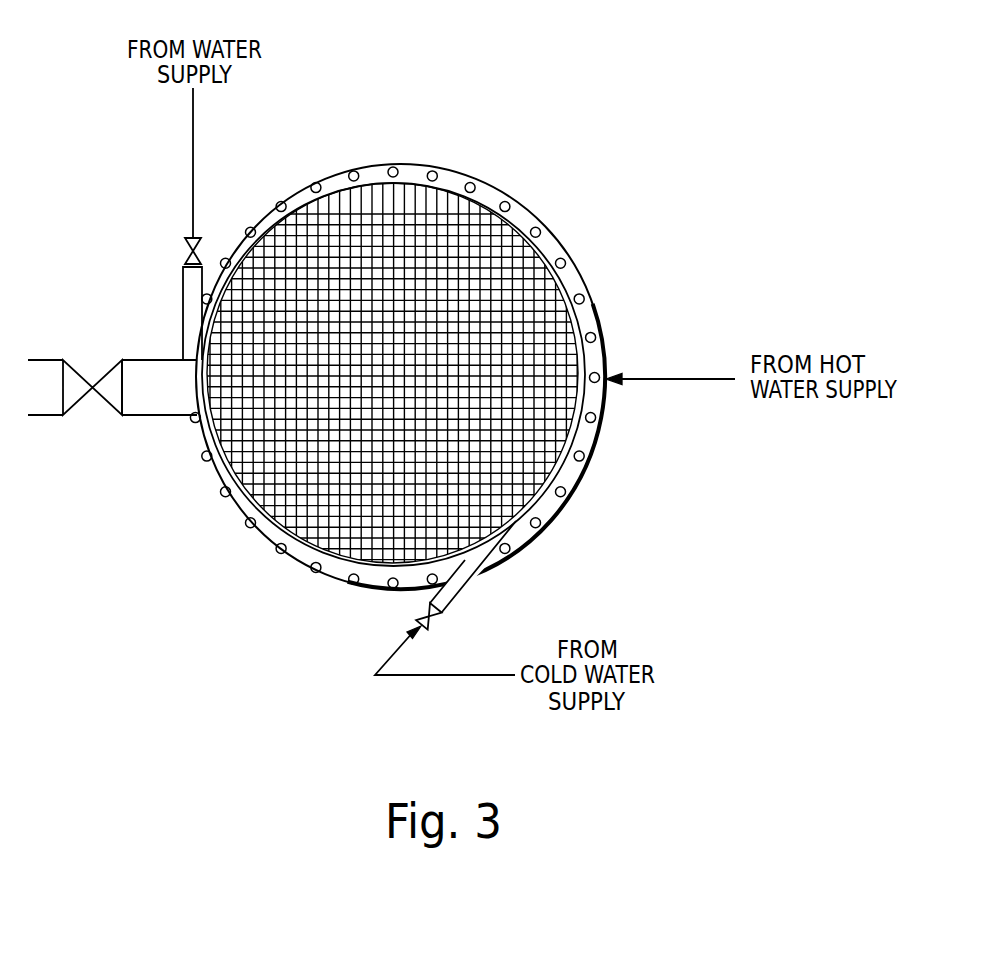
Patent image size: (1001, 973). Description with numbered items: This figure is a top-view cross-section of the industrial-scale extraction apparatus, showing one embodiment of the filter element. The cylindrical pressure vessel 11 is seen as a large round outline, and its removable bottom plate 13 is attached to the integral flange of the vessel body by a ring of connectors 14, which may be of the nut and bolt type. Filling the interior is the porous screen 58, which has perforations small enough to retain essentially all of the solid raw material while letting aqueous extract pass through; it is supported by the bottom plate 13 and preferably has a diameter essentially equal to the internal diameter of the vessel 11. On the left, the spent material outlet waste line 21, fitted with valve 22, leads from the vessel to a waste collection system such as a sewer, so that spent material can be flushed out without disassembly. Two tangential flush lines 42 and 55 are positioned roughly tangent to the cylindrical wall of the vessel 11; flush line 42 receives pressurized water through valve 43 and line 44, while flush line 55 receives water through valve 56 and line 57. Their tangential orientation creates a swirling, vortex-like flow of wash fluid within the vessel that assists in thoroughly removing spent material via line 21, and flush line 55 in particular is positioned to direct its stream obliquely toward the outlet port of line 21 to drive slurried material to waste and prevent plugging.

The cylindrical pressure vessel 11 is at (448, 192).
The removable bottom plate 13 is at (526, 206).
The connectors 14 is at (473, 183).
The spent material outlet waste line 21 is at (138, 358).
The valve 22 is at (75, 362).
The tangential flush line 42 is at (473, 578).
The valve 43 is at (435, 622).
The line 44 is at (428, 677).
The tangential flush line 55 is at (183, 273).
The valve 56 is at (201, 243).
The line 57 is at (193, 153).
The porous screen 58 is at (533, 492).